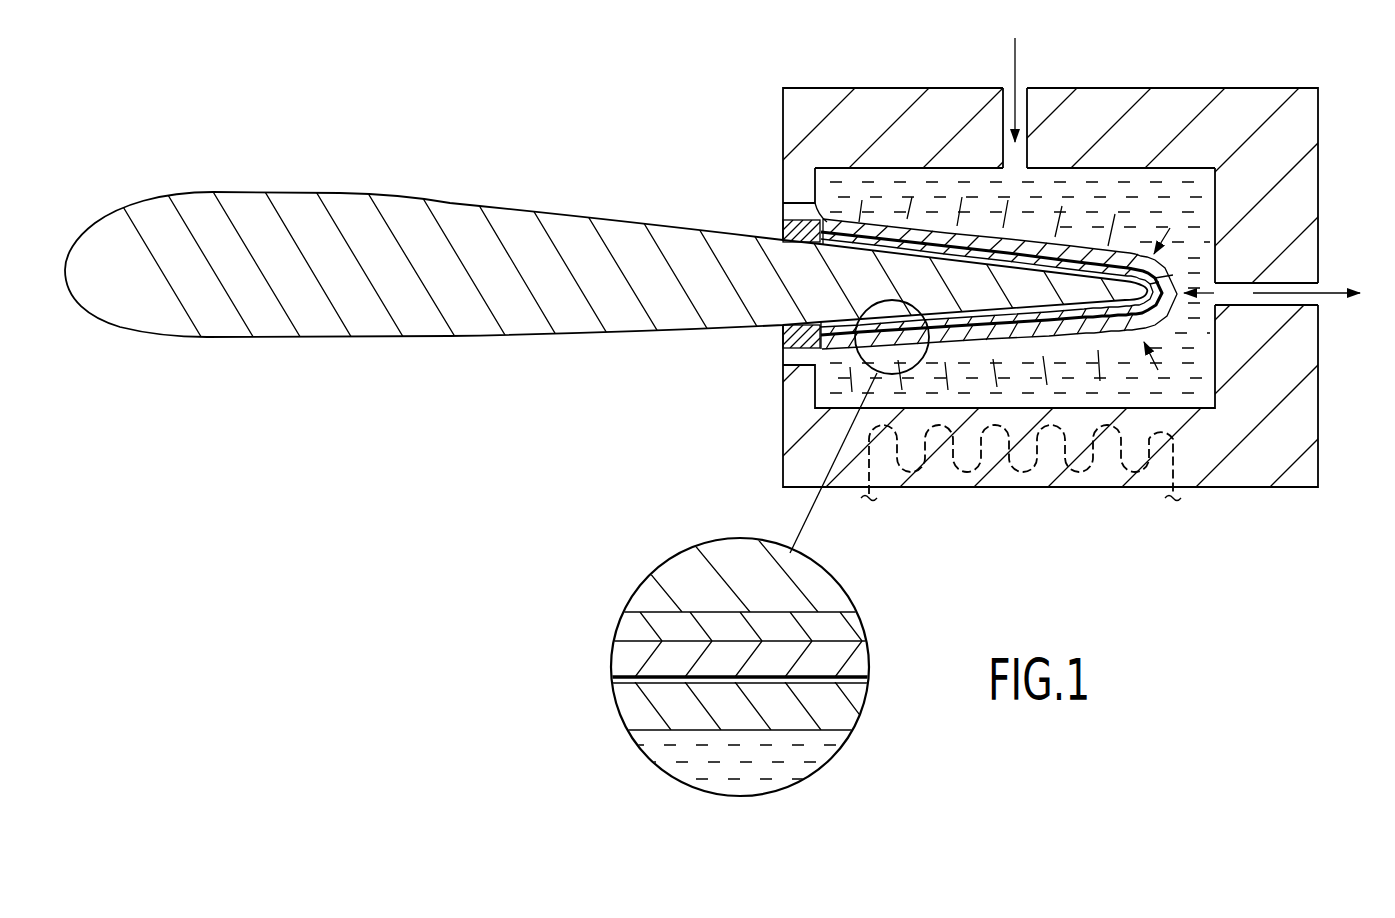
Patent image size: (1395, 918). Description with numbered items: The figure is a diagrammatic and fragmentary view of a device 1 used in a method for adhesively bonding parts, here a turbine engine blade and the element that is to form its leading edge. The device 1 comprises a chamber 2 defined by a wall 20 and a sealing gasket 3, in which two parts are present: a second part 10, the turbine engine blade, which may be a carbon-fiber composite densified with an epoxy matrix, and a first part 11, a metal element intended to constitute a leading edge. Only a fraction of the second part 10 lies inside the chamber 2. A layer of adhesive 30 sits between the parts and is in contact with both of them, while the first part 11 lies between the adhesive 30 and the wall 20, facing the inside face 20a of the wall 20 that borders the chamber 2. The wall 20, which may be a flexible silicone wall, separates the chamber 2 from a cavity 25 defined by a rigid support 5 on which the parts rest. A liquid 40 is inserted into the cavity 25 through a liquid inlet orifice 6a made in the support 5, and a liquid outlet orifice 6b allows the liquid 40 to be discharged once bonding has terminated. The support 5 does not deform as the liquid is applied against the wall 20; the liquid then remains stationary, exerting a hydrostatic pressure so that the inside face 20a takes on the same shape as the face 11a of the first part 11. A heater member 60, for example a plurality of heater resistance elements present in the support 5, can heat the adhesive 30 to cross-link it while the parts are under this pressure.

The device 1 is at (770, 174).
The chamber 2 is at (843, 348).
The sealing gasket 3 is at (785, 344).
The support 5 is at (1293, 413).
The liquid inlet orifice 6a is at (1023, 98).
The liquid outlet orifice 6b is at (1318, 302).
The second part 10 is at (408, 271).
The first part 11 is at (843, 230).
The face of the part 11a is at (625, 678).
The wall 20 is at (927, 233).
The inside face of the wall 20a is at (628, 698).
The cavity 25 is at (1121, 197).
The layer of adhesive 30 is at (1018, 257).
The liquid 40 is at (1190, 203).
The heater member 60 is at (1175, 468).